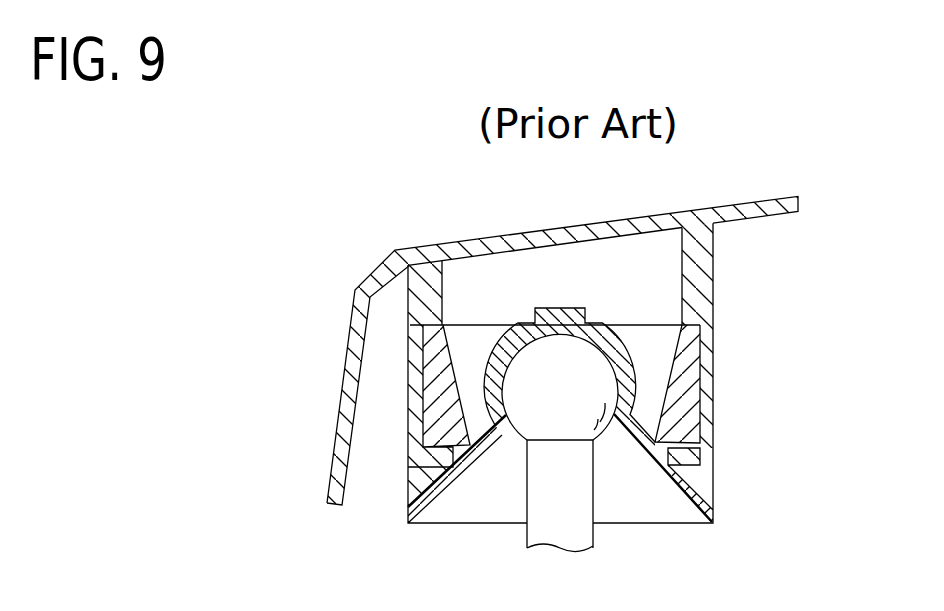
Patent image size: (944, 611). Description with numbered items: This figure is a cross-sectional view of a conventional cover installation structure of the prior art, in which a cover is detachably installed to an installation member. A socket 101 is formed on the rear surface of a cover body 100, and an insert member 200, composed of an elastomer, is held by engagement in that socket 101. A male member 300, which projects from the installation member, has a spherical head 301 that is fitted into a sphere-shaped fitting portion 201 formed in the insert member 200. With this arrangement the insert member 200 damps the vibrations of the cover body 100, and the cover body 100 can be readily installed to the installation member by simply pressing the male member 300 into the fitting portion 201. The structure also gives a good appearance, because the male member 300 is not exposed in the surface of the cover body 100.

The cover body 100 is at (587, 225).
The socket 101 is at (705, 267).
The insert member 200 is at (707, 497).
The fitting portion 201 is at (525, 362).
The male member 300 is at (578, 497).
The spherical head 301 is at (585, 353).